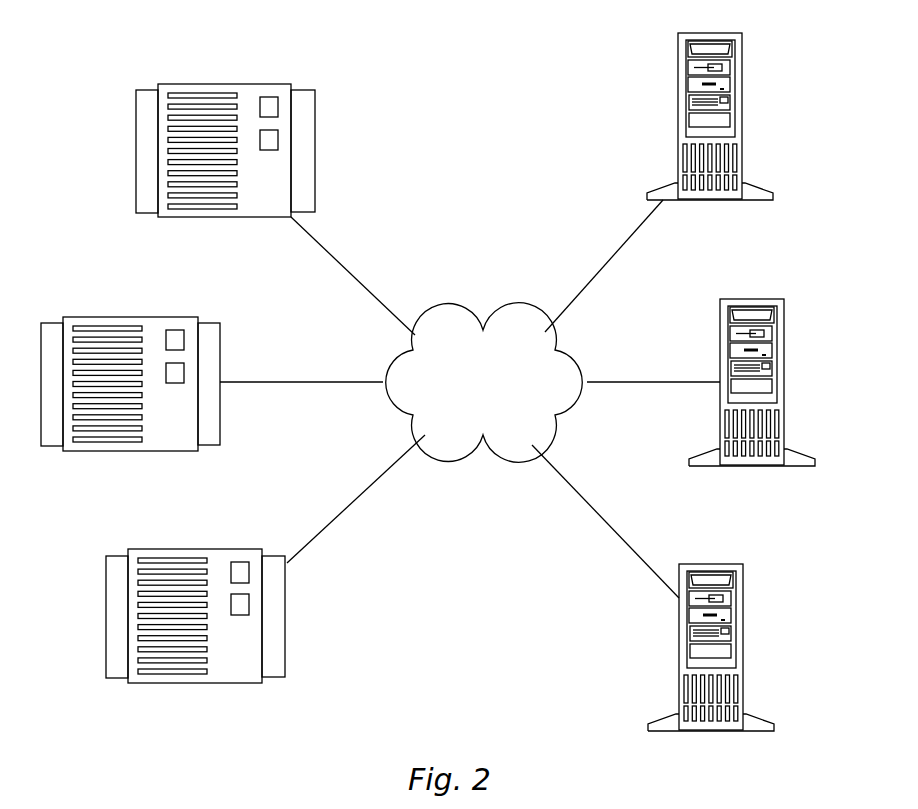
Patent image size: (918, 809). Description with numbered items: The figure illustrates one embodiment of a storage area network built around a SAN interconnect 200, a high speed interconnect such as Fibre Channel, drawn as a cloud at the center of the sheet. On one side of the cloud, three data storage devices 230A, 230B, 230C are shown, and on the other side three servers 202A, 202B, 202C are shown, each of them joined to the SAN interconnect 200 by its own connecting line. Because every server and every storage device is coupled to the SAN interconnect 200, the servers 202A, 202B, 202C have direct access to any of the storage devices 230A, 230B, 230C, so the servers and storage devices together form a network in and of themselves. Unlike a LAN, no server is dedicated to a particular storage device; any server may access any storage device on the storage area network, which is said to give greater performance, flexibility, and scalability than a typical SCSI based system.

The SAN interconnect 200 is at (469, 405).
The server 202A is at (742, 110).
The server 202B is at (785, 373).
The server 202C is at (743, 638).
The data storage device 230A is at (316, 150).
The data storage device 230B is at (222, 347).
The data storage device 230C is at (284, 612).